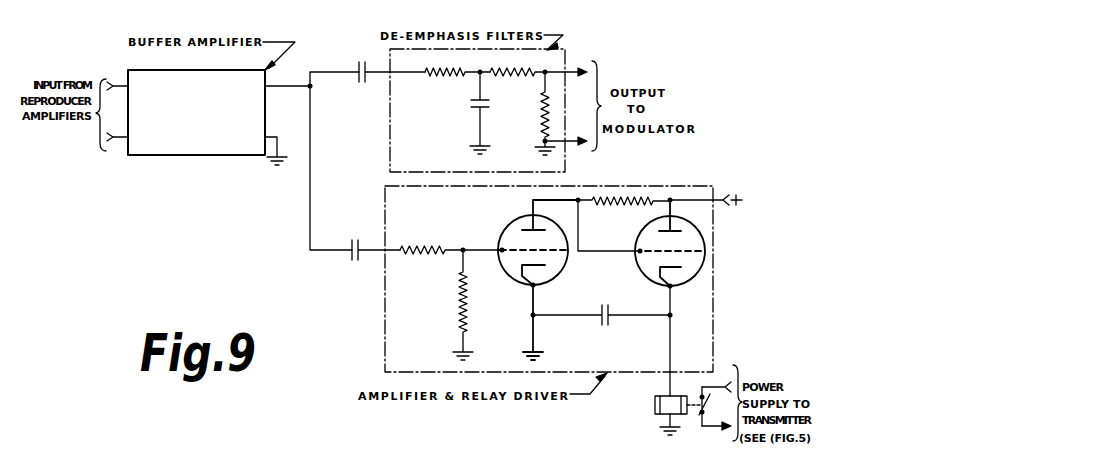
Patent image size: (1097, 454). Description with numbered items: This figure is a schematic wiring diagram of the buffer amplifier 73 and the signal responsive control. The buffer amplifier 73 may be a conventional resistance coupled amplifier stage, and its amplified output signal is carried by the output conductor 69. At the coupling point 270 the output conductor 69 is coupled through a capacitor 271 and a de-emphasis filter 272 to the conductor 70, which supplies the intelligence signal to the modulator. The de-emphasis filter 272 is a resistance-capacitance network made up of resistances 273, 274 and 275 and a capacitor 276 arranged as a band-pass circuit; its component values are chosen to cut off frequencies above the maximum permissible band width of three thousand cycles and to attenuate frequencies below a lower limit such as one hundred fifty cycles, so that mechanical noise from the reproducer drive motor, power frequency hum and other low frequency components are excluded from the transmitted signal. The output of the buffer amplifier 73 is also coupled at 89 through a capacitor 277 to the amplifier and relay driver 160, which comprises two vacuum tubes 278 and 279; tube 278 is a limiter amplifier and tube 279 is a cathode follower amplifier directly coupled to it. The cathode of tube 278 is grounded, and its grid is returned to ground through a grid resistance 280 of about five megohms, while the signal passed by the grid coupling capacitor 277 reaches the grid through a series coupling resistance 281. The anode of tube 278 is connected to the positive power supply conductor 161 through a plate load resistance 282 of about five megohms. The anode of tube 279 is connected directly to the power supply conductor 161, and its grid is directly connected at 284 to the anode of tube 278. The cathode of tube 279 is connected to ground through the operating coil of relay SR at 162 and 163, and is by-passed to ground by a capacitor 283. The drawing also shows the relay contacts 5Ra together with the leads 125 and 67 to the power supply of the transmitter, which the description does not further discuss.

The buffer amplifier 73 is at (190, 160).
The output conductor 69 is at (272, 88).
The coupling point 270 is at (323, 72).
The capacitor 271 is at (358, 88).
The de-emphasis filter 272 is at (390, 133).
The resistance 273 is at (437, 84).
The resistance 274 is at (510, 80).
The resistance 275 is at (540, 121).
The capacitor 276 is at (476, 110).
The conductor 70 is at (570, 68).
The coupling point 89 is at (311, 193).
The capacitor 277 is at (354, 271).
The series coupling resistance 281 is at (418, 243).
The grid resistance 280 is at (459, 300).
The vacuum tube 278 is at (518, 283).
The vacuum tube 279 is at (641, 271).
The plate load resistance 282 is at (621, 199).
The direct connection 284 is at (580, 251).
The capacitor 283 is at (606, 330).
The amplifier and relay driver 160 is at (385, 330).
The positive power supply conductor 161 is at (714, 188).
The cathode connection to relay coil 162 is at (664, 383).
The relay coil ground connection 163 is at (666, 426).
The power supply lead 125 is at (721, 382).
The relay SR is at (671, 405).
The relay contacts 5Ra is at (711, 406).
The power supply lead to transmitter 67 is at (703, 429).